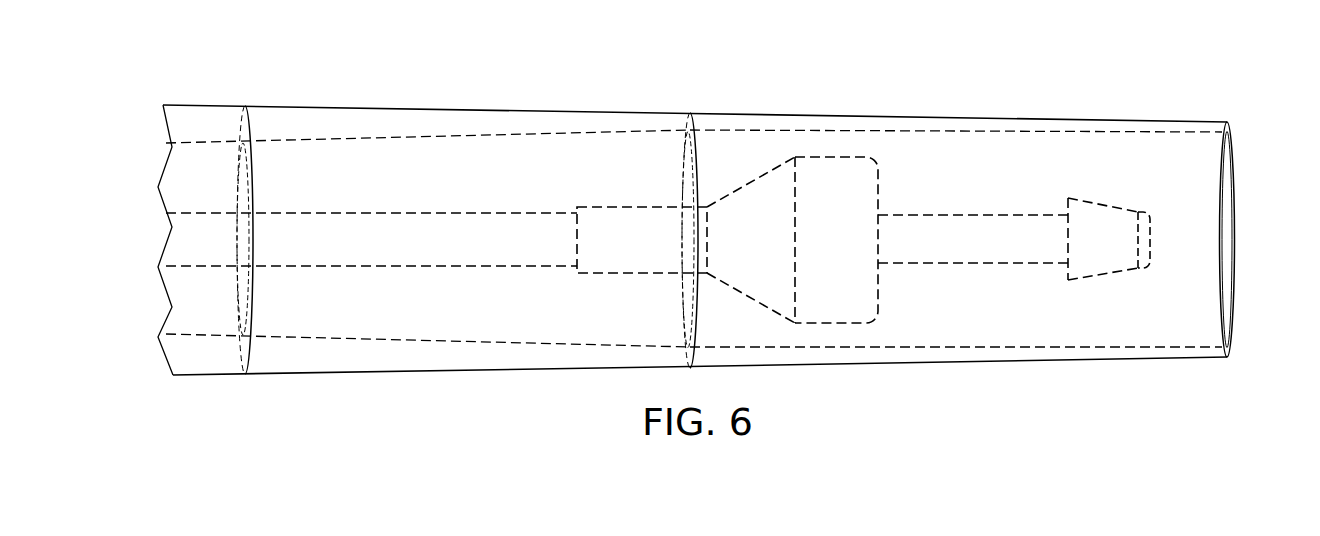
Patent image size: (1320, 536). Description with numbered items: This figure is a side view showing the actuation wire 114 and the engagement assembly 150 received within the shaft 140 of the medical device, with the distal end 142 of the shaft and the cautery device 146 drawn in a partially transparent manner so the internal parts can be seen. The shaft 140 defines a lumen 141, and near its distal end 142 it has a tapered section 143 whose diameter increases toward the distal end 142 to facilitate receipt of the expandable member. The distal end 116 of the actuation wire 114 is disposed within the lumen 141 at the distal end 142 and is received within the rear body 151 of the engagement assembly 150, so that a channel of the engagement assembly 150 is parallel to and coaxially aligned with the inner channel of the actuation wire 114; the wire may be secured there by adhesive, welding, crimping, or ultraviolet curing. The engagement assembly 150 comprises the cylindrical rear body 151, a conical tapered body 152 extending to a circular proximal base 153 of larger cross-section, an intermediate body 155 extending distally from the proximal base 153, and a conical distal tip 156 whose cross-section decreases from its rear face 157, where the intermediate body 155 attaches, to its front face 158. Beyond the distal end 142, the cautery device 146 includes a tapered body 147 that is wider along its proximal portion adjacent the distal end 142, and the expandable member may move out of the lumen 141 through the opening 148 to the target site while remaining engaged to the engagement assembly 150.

The shaft 140 is at (238, 88).
The lumen 141 is at (345, 318).
The distal end 142 is at (648, 105).
The tapered section 143 is at (370, 140).
The cautery device 146 is at (1180, 112).
The tapered body 147 is at (1057, 131).
The opening 148 is at (1245, 222).
The engagement assembly 150 is at (948, 188).
The actuation wire 114 is at (483, 235).
The distal end 116 is at (535, 258).
The rear body 151 is at (640, 262).
The tapered body 152 is at (748, 196).
The proximal base 153 is at (830, 158).
The intermediate body 155 is at (973, 250).
The distal tip 156 is at (1100, 267).
The rear face 157 is at (1065, 271).
The front face 158 is at (1147, 263).